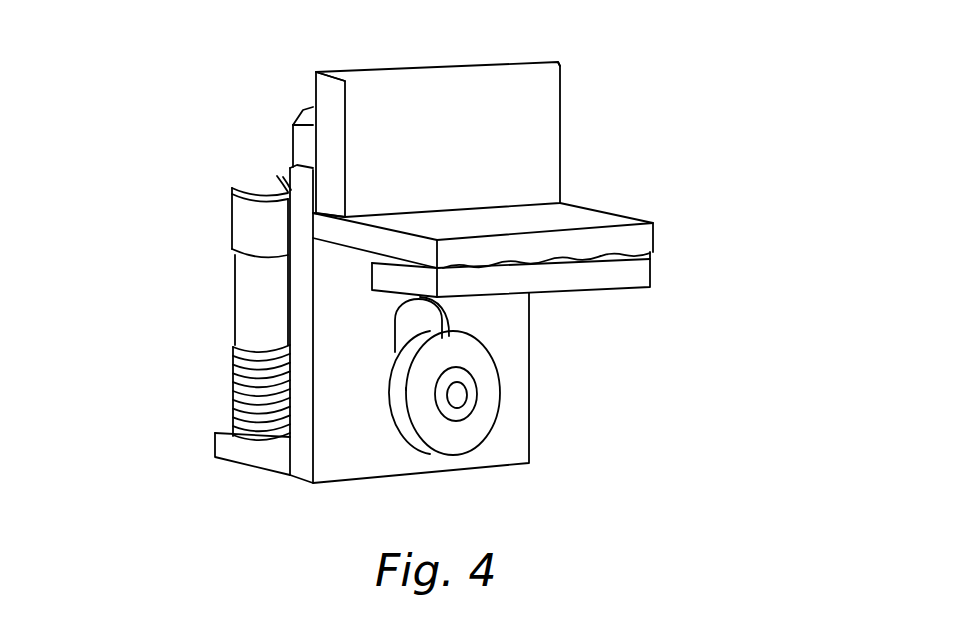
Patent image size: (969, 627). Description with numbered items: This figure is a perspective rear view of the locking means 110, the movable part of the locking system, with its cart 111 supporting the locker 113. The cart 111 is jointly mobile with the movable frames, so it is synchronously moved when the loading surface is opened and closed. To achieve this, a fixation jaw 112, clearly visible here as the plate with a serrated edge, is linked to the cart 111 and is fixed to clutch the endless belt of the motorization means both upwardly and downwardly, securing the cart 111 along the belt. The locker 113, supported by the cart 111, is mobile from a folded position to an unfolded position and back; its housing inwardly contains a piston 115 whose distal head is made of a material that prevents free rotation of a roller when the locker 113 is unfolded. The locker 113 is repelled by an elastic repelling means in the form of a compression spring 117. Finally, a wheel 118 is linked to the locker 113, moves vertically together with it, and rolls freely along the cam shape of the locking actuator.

The locking means 110 is at (568, 122).
The cart 111 is at (513, 428).
The fixation jaw 112 is at (653, 253).
The locker 113 is at (261, 187).
The piston 115 is at (245, 310).
The compression spring 117 is at (233, 380).
The wheel 118 is at (485, 387).